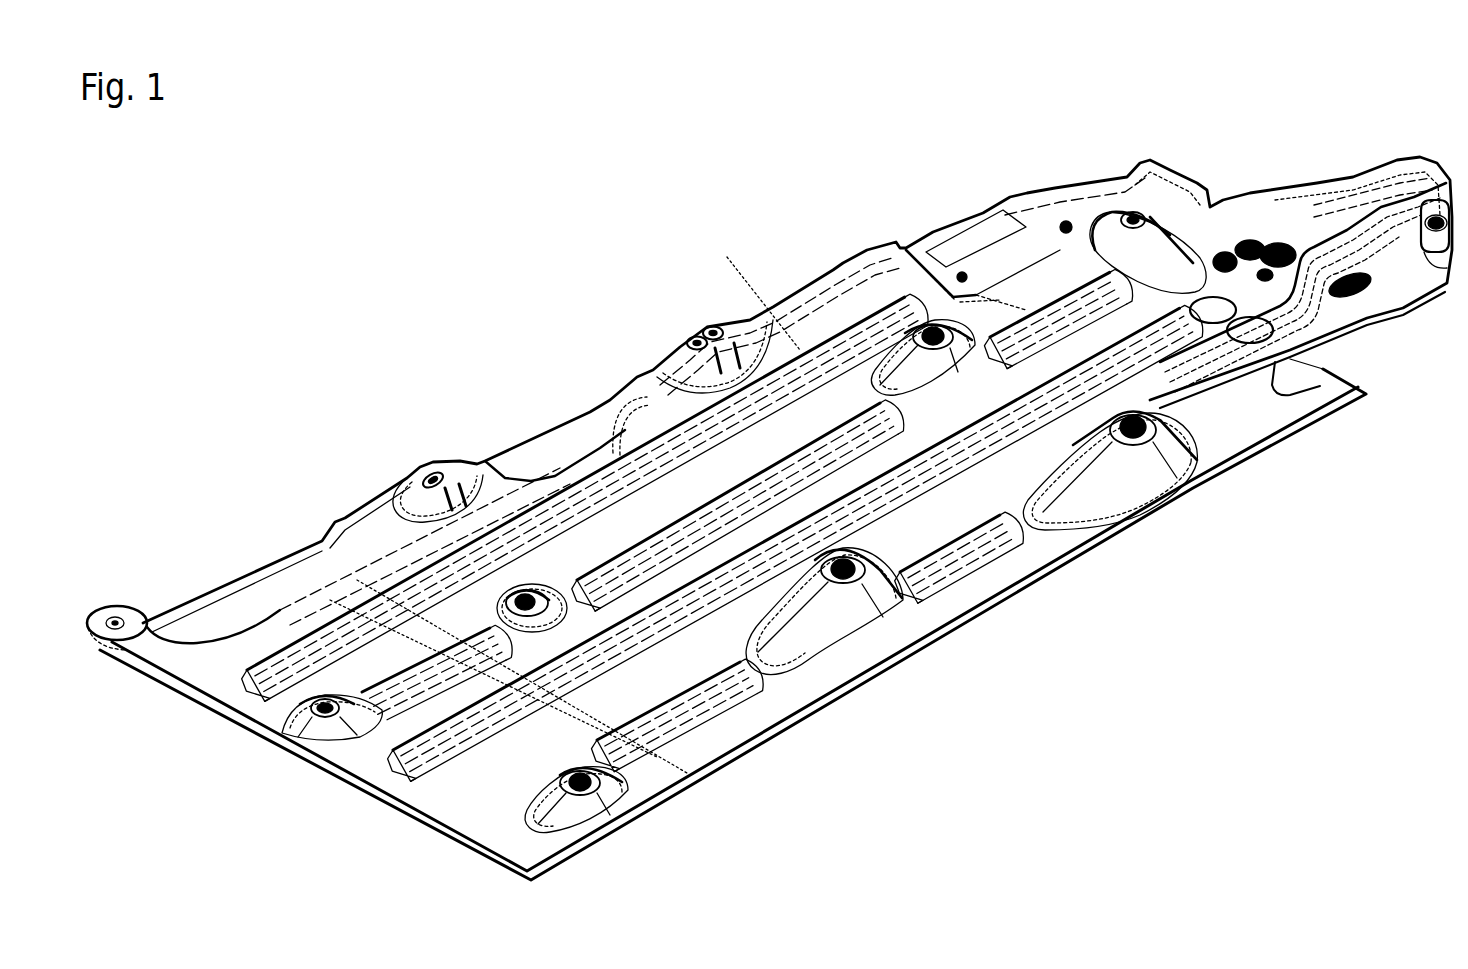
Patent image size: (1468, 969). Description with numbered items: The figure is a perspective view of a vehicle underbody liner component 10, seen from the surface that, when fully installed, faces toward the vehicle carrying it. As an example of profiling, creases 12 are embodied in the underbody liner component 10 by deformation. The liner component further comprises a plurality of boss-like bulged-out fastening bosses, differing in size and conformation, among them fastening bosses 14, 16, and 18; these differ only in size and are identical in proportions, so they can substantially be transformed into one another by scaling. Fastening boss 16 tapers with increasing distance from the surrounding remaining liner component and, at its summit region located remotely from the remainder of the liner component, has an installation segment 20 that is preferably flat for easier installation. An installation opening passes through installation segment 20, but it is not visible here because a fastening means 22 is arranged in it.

The underbody liner component 10 is at (420, 252).
The creases 12 is at (607, 630).
The fastening boss 14 is at (860, 620).
The fastening boss 16 is at (1130, 490).
The fastening boss 18 is at (522, 785).
The installation segment 20 is at (1117, 438).
The fastening means 22 is at (1137, 413).